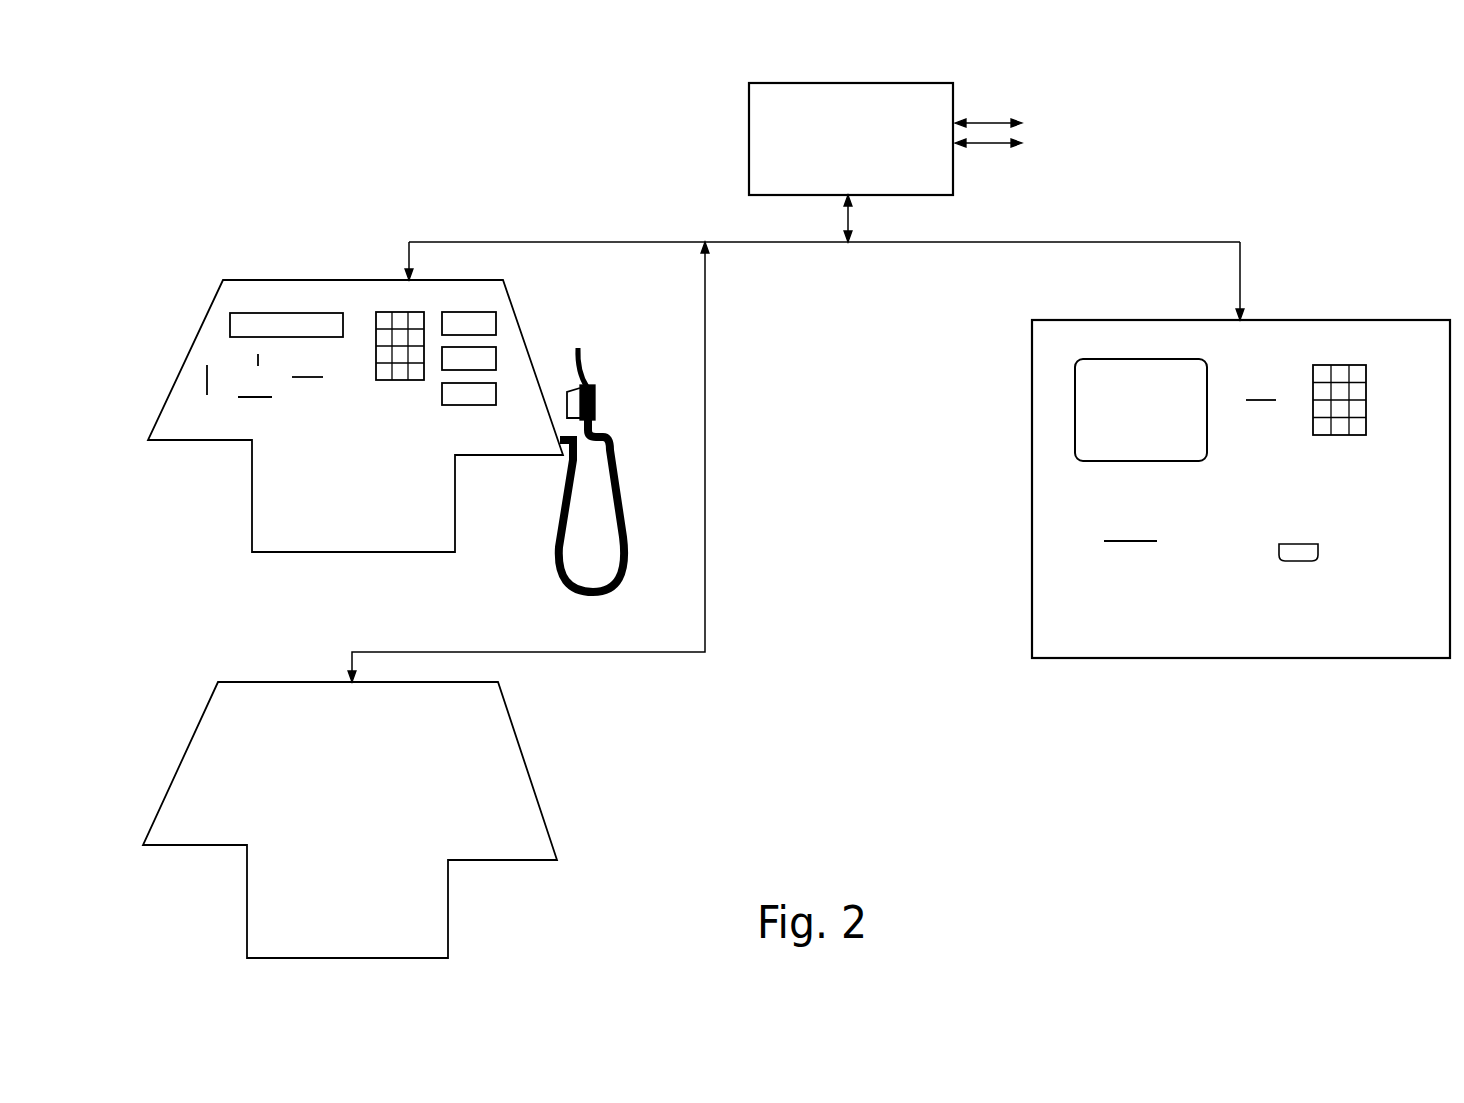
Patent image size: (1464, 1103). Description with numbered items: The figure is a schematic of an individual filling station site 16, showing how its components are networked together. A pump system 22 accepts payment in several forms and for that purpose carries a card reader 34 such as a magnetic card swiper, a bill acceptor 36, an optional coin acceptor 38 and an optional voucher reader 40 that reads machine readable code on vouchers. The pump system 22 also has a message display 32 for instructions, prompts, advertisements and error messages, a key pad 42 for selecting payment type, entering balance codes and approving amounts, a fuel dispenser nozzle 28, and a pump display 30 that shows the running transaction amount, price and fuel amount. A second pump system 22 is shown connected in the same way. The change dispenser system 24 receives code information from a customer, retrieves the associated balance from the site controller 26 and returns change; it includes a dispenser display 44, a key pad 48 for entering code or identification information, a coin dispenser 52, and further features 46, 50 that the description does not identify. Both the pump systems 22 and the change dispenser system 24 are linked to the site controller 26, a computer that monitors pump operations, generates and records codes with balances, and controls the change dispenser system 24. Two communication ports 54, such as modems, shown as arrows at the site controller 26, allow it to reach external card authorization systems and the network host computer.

The filling station site 16 is at (1248, 158).
The pump system 22 is at (238, 257).
The change dispenser system 24 is at (1356, 275).
The site controller 26 is at (748, 135).
The fuel dispenser nozzle 28 is at (596, 397).
The pump display 30 is at (488, 300).
The message display 32 is at (230, 318).
The card reader 34 is at (205, 370).
The bill acceptor 36 is at (246, 397).
The coin acceptor 38 is at (258, 360).
The voucher reader 40 is at (312, 378).
The key pad 42 is at (386, 311).
The dispenser display 44 is at (1075, 407).
The card slot 46 is at (1253, 400).
The key pad 48 is at (1366, 396).
The receipt slot 50 is at (1130, 541).
The coin dispenser 52 is at (1300, 544).
The communication ports 54 is at (970, 125).